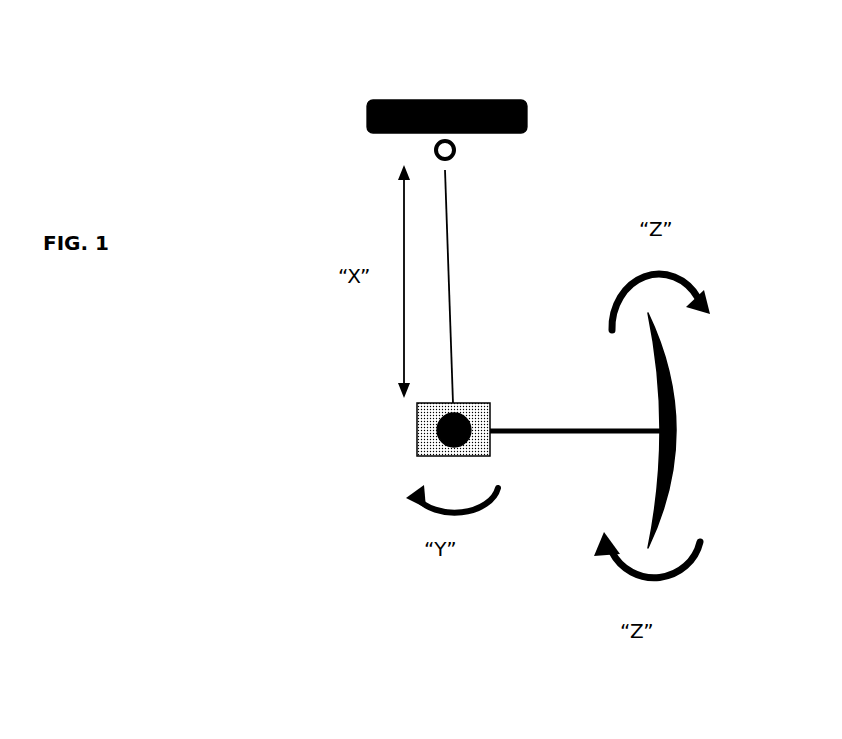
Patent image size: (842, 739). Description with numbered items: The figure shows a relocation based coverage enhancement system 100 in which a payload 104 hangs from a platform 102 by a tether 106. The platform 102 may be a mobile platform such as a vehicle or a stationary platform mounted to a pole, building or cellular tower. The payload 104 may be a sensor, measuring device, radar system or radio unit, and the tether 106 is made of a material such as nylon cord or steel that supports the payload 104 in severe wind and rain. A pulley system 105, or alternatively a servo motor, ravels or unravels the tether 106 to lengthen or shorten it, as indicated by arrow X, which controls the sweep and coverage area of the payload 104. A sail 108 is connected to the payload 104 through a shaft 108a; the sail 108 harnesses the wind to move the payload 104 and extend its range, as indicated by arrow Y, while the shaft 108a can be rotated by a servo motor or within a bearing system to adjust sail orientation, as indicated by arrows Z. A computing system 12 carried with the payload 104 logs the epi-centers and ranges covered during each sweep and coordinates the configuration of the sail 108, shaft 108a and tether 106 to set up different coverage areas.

The relocation based coverage enhancement system 100 is at (232, 114).
The platform 102 is at (477, 100).
The pulley system 105 is at (428, 148).
The tether 106 is at (443, 213).
The payload 104 is at (417, 440).
The computing system 12 is at (447, 450).
The shaft 108a is at (626, 429).
The sail 108 is at (674, 378).